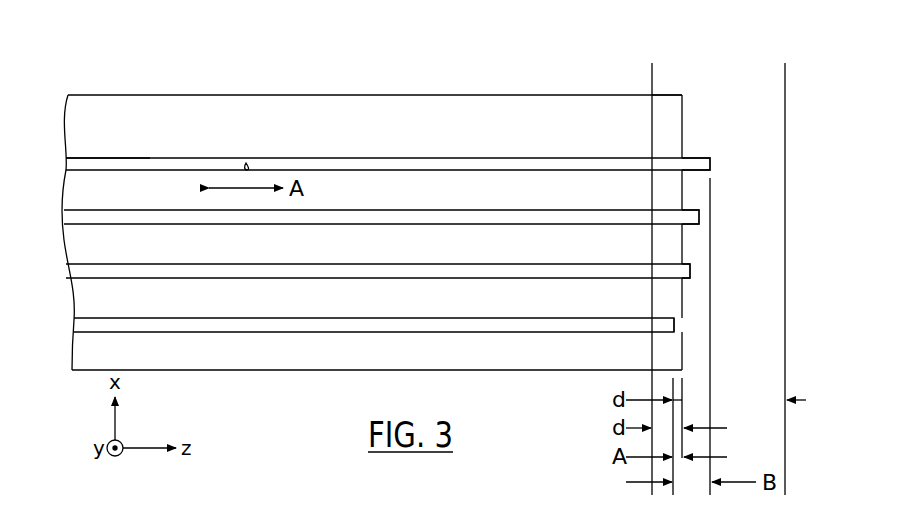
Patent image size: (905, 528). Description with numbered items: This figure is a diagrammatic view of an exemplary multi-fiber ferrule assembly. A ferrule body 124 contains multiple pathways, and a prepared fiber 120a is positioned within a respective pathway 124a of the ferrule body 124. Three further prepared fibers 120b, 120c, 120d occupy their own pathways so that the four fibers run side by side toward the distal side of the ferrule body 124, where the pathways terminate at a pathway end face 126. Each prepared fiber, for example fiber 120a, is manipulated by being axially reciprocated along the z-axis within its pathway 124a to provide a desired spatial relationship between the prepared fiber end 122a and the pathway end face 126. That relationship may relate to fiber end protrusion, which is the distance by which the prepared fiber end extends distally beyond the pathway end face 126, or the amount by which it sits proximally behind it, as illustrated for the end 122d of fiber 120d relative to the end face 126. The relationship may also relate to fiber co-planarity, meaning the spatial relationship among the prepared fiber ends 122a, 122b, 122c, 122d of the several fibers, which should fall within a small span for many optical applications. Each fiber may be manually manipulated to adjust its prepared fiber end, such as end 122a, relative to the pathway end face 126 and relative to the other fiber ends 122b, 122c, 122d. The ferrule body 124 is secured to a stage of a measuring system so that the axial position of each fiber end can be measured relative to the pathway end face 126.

The ferrule body 124 is at (204, 120).
The pathway 124a is at (148, 161).
The prepared fiber 120a is at (326, 167).
The prepared fiber 120b is at (356, 215).
The prepared fiber 120c is at (376, 269).
The prepared fiber 120d is at (396, 326).
The prepared fiber end 122a is at (714, 165).
The prepared fiber end 122b is at (703, 218).
The prepared fiber end 122c is at (694, 270).
The prepared fiber end 122d is at (678, 324).
The pathway end face 126 is at (685, 128).